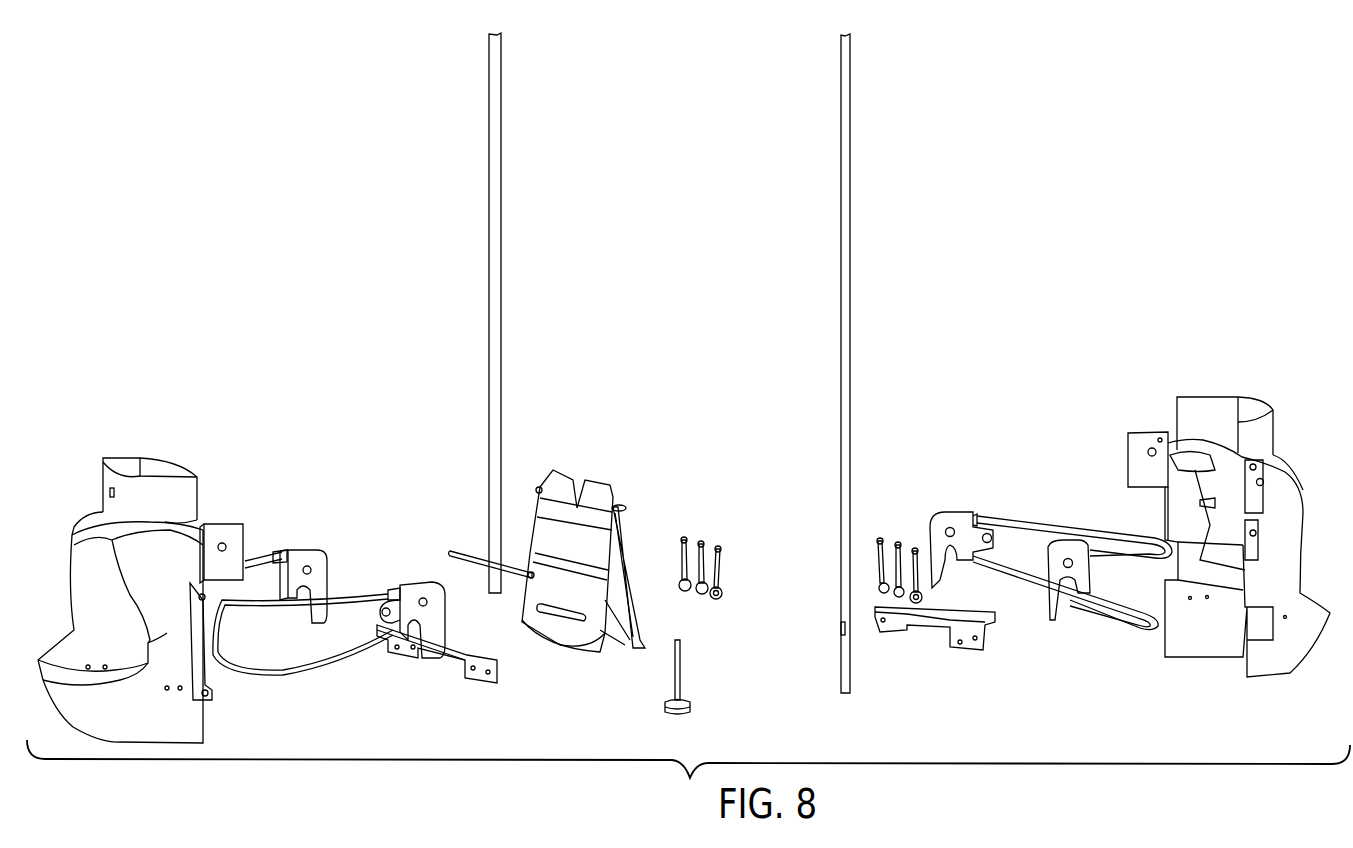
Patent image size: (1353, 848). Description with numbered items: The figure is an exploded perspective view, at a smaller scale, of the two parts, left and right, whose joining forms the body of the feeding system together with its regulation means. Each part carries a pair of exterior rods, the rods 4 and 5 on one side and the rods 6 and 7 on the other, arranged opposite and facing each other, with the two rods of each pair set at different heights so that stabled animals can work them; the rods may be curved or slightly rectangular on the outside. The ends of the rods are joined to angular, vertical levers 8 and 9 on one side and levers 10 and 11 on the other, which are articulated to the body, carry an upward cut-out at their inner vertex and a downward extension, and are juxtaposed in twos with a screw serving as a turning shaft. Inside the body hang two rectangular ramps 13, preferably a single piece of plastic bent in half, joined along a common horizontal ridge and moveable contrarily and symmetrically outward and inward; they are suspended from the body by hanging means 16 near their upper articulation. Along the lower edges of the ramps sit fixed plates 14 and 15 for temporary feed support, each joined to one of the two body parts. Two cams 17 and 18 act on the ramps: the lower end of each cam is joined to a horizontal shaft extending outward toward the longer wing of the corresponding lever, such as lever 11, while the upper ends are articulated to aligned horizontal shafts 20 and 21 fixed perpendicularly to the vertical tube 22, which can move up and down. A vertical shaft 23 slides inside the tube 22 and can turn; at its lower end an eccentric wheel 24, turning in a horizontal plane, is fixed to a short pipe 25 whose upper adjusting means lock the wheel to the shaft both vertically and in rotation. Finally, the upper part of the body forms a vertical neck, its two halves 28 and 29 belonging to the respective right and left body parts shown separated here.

The exterior rod 4 is at (1045, 522).
The exterior rod 5 is at (1118, 615).
The exterior rod 6 is at (288, 605).
The exterior rod 7 is at (262, 678).
The lever 8 is at (952, 515).
The lever 9 is at (1052, 625).
The lever 10 is at (313, 552).
The lever 11 is at (423, 588).
The rectangular ramp 13 is at (600, 488).
The fixed plate 14 is at (930, 617).
The fixed plate 15 is at (460, 650).
The hanging means 16 is at (540, 488).
The cam 17 is at (888, 535).
The cam 18 is at (723, 595).
The horizontal shaft 20 is at (465, 553).
The horizontal shaft 21 is at (528, 570).
The vertical tube 22 is at (497, 312).
The vertical shaft 23 is at (843, 363).
The eccentric wheel 24 is at (688, 707).
The short pipe 25 is at (675, 658).
The neck half 28 is at (1215, 403).
The neck half 29 is at (172, 487).